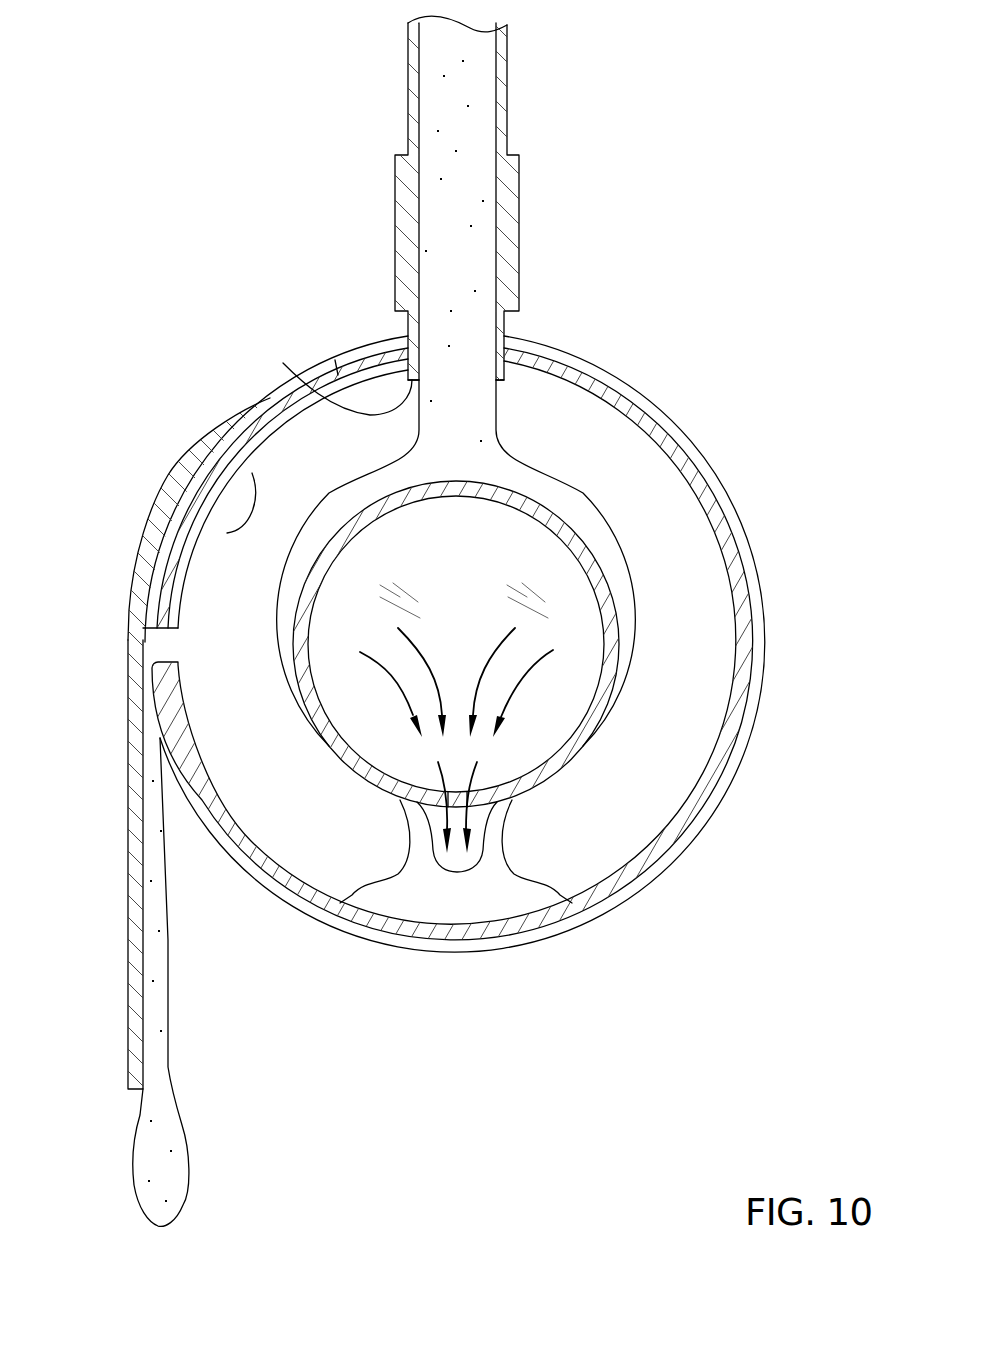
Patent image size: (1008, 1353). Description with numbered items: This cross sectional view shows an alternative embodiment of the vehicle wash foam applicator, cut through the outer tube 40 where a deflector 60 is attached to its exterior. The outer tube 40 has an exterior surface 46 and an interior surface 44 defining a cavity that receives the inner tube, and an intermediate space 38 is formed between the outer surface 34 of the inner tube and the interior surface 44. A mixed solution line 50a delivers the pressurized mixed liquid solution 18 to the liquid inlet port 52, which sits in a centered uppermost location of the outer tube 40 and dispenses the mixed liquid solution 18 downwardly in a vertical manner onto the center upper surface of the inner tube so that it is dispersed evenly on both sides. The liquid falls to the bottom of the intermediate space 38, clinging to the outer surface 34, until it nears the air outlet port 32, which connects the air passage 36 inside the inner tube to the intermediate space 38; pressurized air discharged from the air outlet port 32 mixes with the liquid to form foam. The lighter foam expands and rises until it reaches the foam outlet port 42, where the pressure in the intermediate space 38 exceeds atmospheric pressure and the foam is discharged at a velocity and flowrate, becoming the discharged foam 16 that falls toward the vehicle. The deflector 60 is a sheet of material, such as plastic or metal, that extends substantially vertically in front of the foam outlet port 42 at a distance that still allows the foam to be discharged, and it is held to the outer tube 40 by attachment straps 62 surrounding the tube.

The discharged foam 16 is at (167, 1160).
The mixed liquid solution 18 is at (455, 117).
The air outlet port 32 is at (455, 873).
The outer surface 34 is at (595, 792).
The air passage 36 is at (545, 670).
The intermediate space 38 is at (643, 513).
The outer tube 40 is at (720, 512).
The foam outlet port 42 is at (165, 627).
The interior surface 44 is at (227, 533).
The exterior surface 46 is at (232, 467).
The mixed solution line 50a is at (508, 90).
The liquid inlet port 52 is at (283, 363).
The deflector 60 is at (127, 840).
The attachment strap 62 is at (755, 565).